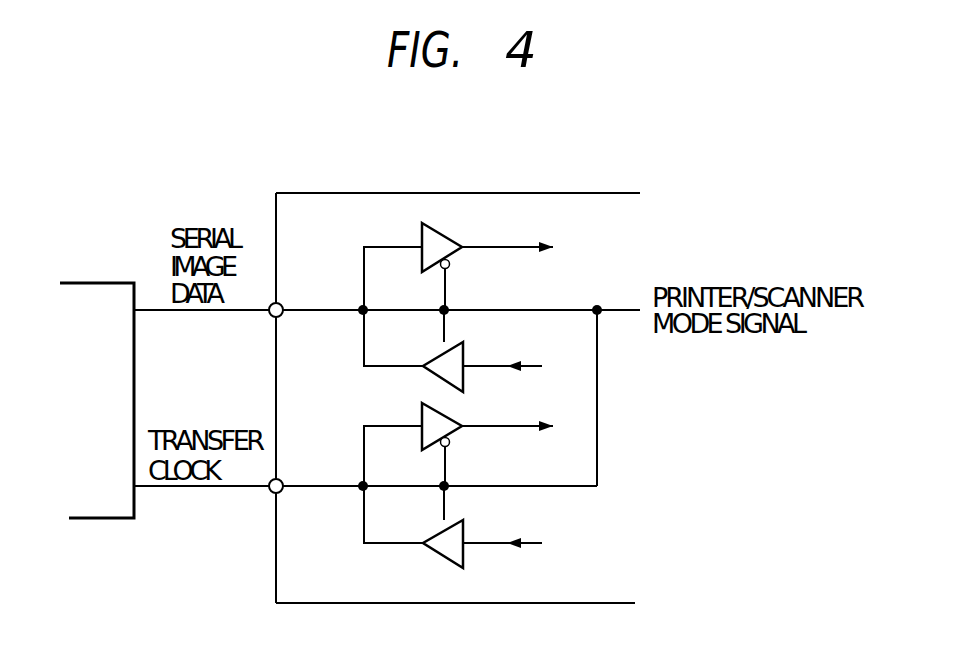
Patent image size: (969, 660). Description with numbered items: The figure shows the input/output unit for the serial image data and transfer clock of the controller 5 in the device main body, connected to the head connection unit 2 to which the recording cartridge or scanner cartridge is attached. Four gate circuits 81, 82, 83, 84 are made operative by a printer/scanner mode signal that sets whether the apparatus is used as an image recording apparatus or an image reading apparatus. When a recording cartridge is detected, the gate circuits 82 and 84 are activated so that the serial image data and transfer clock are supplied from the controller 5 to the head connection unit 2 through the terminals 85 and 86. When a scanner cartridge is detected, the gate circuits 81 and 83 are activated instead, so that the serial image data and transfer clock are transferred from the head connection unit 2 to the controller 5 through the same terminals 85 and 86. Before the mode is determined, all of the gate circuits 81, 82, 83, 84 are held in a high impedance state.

The head connection unit 2 is at (87, 283).
The controller 5 is at (453, 193).
The gate circuit 81 is at (451, 240).
The gate circuit 82 is at (466, 357).
The gate circuit 83 is at (457, 432).
The gate circuit 84 is at (463, 560).
The terminal 85 is at (283, 305).
The terminal 86 is at (283, 482).